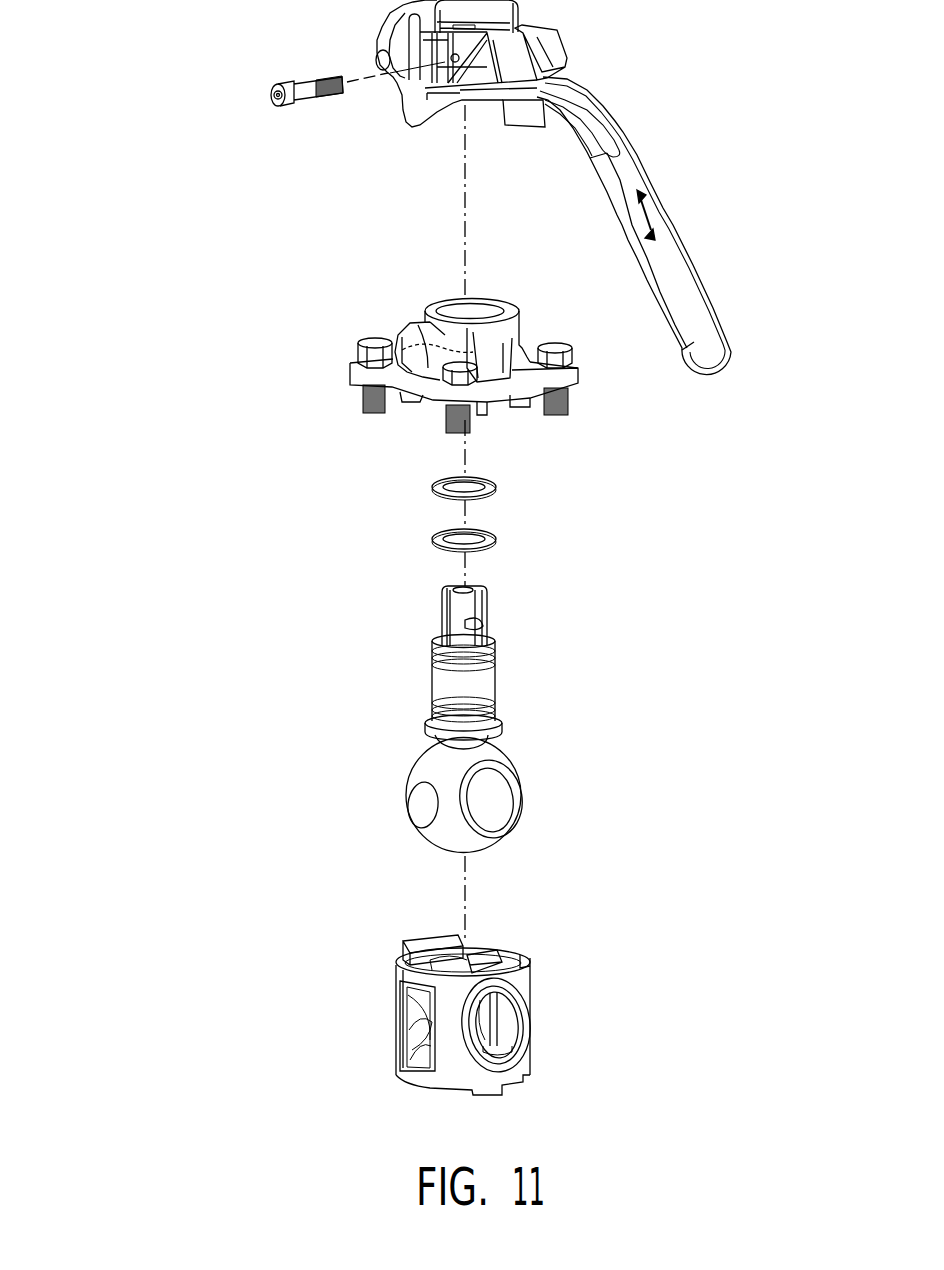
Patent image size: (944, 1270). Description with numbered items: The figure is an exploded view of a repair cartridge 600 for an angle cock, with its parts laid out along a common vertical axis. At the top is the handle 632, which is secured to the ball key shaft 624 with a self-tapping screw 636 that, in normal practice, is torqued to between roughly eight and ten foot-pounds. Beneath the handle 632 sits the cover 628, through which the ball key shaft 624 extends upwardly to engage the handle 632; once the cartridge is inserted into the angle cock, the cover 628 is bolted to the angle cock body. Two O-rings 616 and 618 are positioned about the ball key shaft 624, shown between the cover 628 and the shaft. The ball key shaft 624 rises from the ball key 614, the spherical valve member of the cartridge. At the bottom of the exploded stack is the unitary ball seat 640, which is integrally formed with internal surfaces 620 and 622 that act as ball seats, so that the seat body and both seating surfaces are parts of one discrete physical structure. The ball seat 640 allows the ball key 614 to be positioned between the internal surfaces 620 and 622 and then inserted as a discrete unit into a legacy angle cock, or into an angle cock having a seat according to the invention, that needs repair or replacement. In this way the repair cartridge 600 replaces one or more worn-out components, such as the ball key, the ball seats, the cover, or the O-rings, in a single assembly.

The repair cartridge 600 is at (130, 232).
The self-tapping screw 636 is at (313, 103).
The handle 632 is at (623, 234).
The cover 628 is at (578, 382).
The O-ring 618 is at (433, 489).
The O-ring 616 is at (433, 540).
The ball key shaft 624 is at (495, 673).
The ball key 614 is at (427, 727).
The unitary ball seat 640 is at (398, 961).
The internal surface 620 is at (410, 1033).
The internal surface 622 is at (528, 1028).